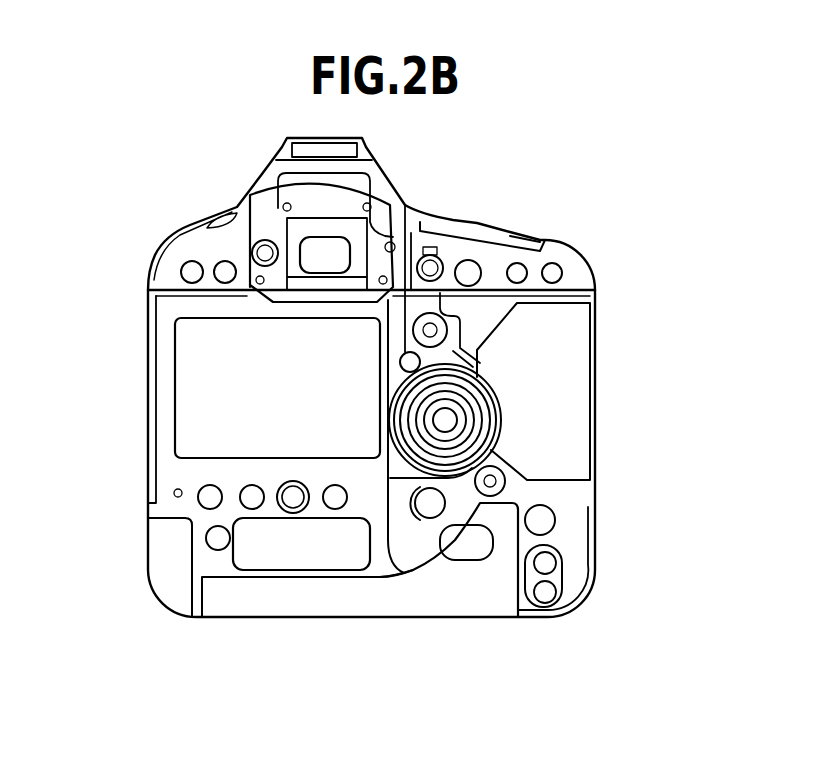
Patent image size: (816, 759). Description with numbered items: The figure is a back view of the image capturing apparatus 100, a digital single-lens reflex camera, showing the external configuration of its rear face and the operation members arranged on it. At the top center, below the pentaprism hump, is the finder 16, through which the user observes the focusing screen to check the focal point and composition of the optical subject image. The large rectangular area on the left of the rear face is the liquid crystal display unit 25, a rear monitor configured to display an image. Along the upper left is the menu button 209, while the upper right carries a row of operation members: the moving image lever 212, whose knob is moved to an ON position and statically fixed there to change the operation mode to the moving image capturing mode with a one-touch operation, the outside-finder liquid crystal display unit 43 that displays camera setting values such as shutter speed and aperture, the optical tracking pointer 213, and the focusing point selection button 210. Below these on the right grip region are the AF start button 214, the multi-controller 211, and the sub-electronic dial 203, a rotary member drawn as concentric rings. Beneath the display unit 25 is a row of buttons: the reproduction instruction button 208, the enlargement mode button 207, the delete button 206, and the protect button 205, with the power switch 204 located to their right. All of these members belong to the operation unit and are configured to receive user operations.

The image capturing apparatus 100 is at (597, 270).
The finder 16 is at (318, 243).
The menu button 209 is at (192, 268).
The moving image lever 212 is at (431, 266).
The outside-finder liquid crystal display unit 43 is at (490, 225).
The optical tracking pointer 213 is at (470, 272).
The focusing point selection button 210 is at (556, 272).
The AF start button 214 is at (477, 292).
The multi-controller 211 is at (433, 333).
The sub-electronic dial 203 is at (478, 440).
The liquid crystal display unit 25 is at (220, 388).
The reproduction instruction button 208 is at (210, 503).
The enlargement mode button 207 is at (253, 503).
The delete button 206 is at (293, 503).
The protect button 205 is at (335, 503).
The power switch 204 is at (430, 508).